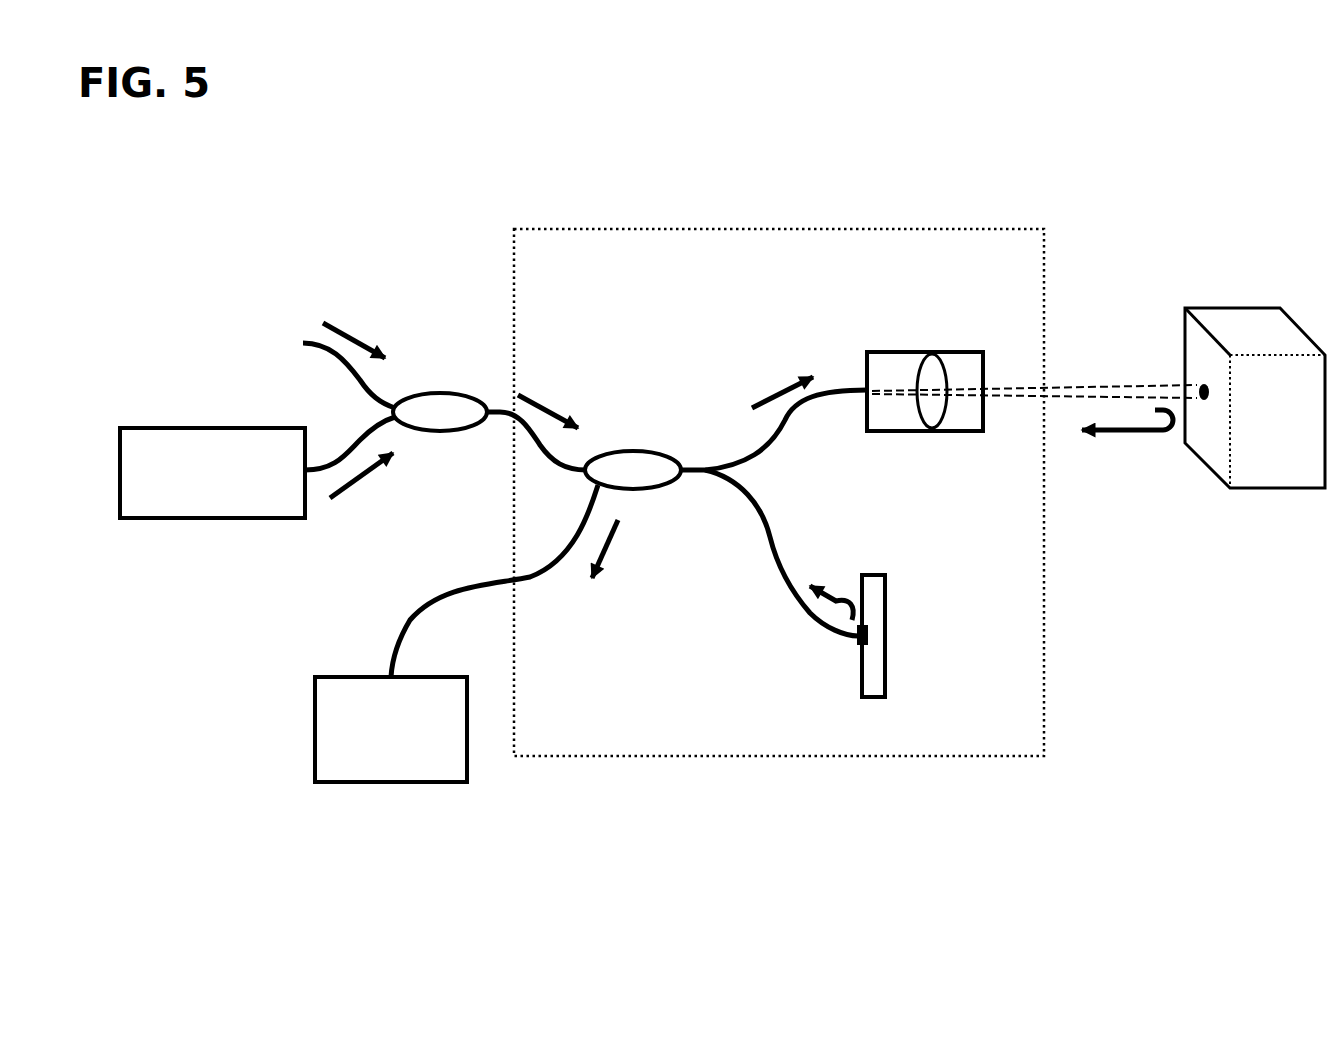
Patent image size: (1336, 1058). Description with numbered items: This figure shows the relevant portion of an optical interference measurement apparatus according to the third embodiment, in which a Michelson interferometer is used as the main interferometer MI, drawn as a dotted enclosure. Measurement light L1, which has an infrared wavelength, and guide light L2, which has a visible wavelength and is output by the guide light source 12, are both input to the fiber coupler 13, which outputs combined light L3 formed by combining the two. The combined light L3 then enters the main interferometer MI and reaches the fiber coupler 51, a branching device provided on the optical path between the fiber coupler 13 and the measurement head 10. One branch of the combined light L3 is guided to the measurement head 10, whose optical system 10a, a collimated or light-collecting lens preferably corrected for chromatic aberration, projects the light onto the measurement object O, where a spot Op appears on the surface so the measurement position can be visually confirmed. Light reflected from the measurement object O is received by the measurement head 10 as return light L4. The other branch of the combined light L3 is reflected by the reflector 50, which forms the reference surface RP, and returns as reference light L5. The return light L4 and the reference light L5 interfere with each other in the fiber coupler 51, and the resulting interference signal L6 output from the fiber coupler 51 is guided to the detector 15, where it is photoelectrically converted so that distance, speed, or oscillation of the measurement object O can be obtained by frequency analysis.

The guide light source 12 is at (197, 435).
The fiber coupler 13 is at (437, 393).
The fiber coupler 51 is at (640, 457).
The measurement head 10 is at (967, 352).
The optical system 10a is at (930, 352).
The detector 15 is at (418, 783).
The reflector 50 is at (880, 595).
The reference surface RP is at (857, 643).
The main interferometer MI is at (515, 253).
The measurement object O is at (1250, 320).
The spot Op is at (1197, 385).
The measurement light L1 is at (354, 324).
The guide light L2 is at (361, 495).
The combined light L3 is at (665, 383).
The return light L4 is at (1121, 448).
The reference light L5 is at (827, 584).
The interference signal L6 is at (629, 549).